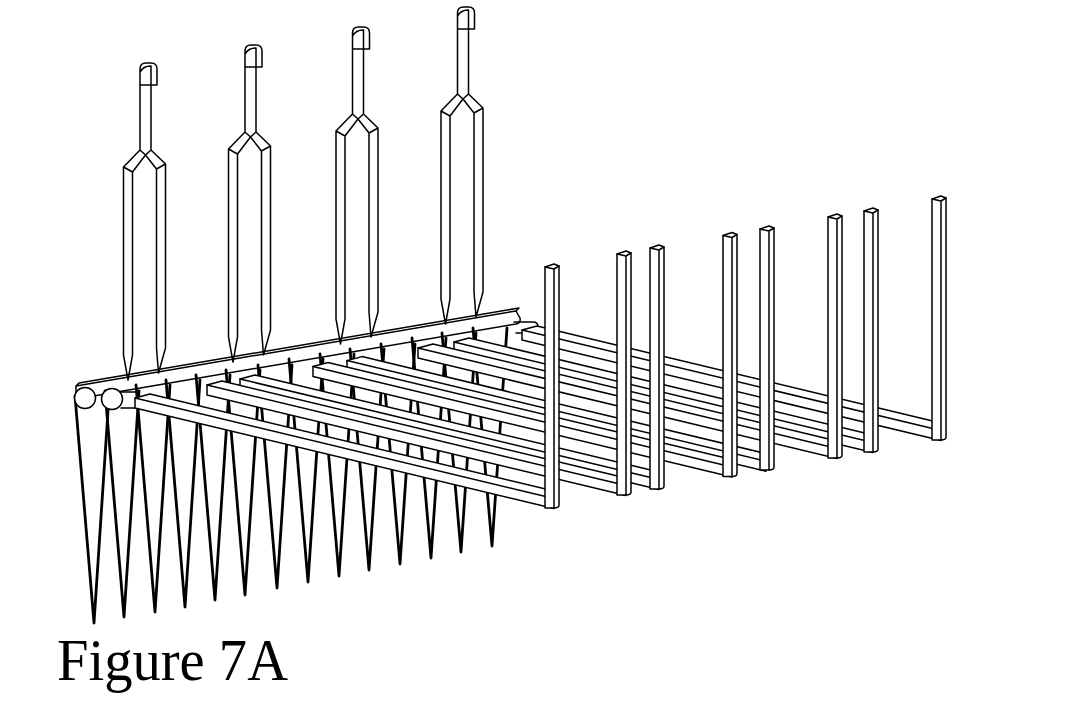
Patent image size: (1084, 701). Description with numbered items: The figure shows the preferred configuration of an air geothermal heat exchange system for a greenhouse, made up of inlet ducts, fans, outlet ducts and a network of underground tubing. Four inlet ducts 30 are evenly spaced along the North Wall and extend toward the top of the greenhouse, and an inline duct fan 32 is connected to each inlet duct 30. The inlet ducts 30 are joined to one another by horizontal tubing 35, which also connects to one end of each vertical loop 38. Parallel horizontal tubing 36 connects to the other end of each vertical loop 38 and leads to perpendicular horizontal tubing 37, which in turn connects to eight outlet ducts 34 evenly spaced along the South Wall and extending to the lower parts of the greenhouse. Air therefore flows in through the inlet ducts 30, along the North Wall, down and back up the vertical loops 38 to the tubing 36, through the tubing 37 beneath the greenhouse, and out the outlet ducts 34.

The inlet duct 30 is at (130, 190).
The inline duct fan 32 is at (364, 32).
The outlet duct 34 is at (765, 227).
The horizontal tubing 35 is at (90, 390).
The parallel horizontal tubing 36 is at (193, 382).
The perpendicular horizontal tubing 37 is at (524, 506).
The vertical loop 38 is at (403, 559).